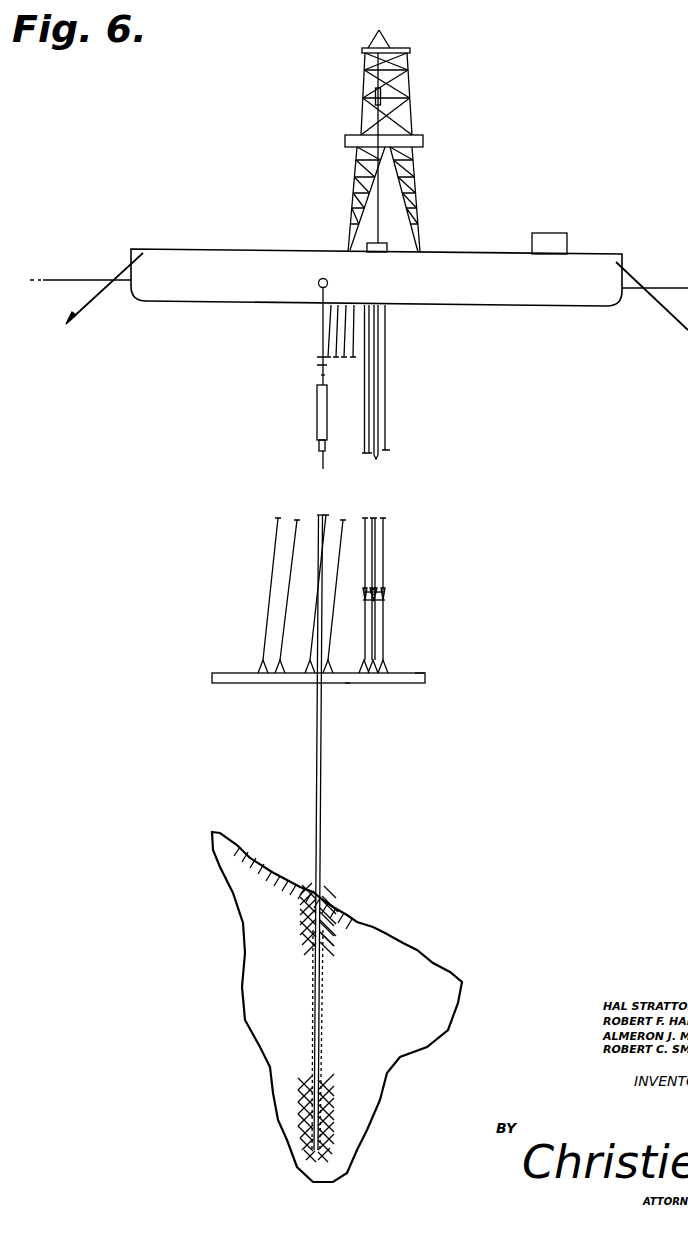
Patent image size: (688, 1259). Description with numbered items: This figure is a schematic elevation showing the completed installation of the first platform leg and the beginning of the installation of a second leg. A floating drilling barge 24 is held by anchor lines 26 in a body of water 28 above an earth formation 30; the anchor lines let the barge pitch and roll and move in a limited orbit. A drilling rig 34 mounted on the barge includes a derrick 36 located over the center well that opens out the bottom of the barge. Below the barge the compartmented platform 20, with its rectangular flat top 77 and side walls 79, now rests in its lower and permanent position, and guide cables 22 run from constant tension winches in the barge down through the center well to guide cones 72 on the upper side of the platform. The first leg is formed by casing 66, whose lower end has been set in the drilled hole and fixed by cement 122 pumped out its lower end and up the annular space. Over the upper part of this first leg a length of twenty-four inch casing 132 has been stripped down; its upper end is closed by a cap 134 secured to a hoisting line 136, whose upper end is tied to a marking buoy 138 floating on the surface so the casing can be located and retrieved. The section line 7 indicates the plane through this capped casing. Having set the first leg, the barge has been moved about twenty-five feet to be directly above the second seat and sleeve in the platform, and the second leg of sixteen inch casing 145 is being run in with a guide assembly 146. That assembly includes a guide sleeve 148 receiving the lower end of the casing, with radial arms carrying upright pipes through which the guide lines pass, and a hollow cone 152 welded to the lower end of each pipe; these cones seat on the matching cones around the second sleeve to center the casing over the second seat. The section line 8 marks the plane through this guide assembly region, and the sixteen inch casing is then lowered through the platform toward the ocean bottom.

The section line 7- 7 is at (320, 368).
The section line 8- 8 is at (503, 695).
The compartmented platform 20 is at (210, 673).
The guide cables 22 is at (292, 565).
The floating drilling barge 24 is at (186, 290).
The anchor lines 26 is at (93, 298).
The body of water 28 is at (552, 357).
The earth formation 30 is at (272, 872).
The drilling rig 34 is at (418, 79).
The derrick 36 is at (408, 117).
The casing 66 is at (320, 775).
The guide cones 72 is at (258, 670).
The rectangular flat top 77 is at (425, 672).
The side walls 79 is at (347, 683).
The cement 122 is at (320, 1020).
The 24-inch casing 132 is at (317, 413).
The cap 134 is at (318, 385).
The hoisting line 136 is at (323, 377).
The marking buoy 138 is at (319, 286).
The 16-inch casing 145 is at (378, 418).
The guide assembly 146 is at (388, 598).
The guide sleeve 148 is at (375, 588).
The hollow cone 152 is at (387, 602).